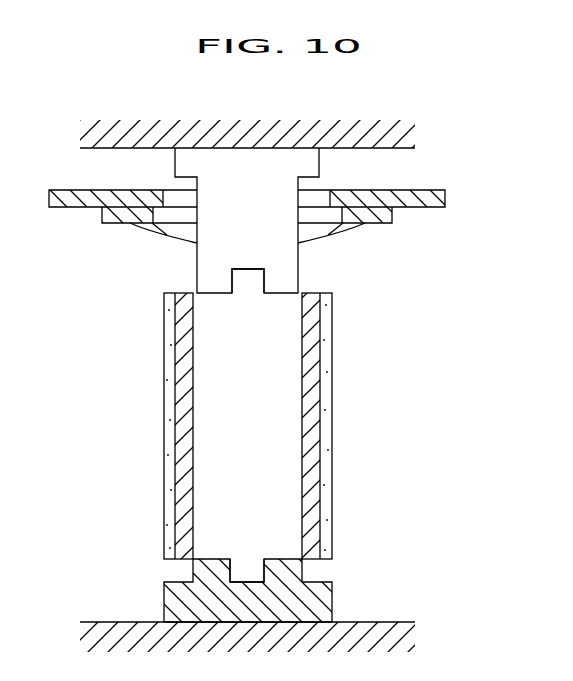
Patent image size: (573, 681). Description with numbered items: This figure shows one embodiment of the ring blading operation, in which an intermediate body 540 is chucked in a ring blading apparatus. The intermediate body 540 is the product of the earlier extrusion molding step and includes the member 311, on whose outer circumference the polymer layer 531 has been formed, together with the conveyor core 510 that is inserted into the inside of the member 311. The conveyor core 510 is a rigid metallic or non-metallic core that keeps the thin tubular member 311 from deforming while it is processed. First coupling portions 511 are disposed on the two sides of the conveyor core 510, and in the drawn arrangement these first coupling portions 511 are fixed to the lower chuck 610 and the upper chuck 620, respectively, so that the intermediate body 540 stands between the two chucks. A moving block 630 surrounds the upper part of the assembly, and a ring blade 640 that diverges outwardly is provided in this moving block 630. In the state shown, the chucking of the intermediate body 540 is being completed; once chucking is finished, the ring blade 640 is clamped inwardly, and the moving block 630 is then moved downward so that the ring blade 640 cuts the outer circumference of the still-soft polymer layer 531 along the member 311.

The member 311 is at (313, 380).
The conveyor core 510 is at (282, 426).
The first coupling portion 511 is at (238, 281).
The polymer layer 531 is at (325, 330).
The intermediate body 540 is at (136, 447).
The lower chuck 610 is at (325, 597).
The upper chuck 620 is at (322, 163).
The moving block 630 is at (446, 199).
The ring blade 640 is at (349, 227).